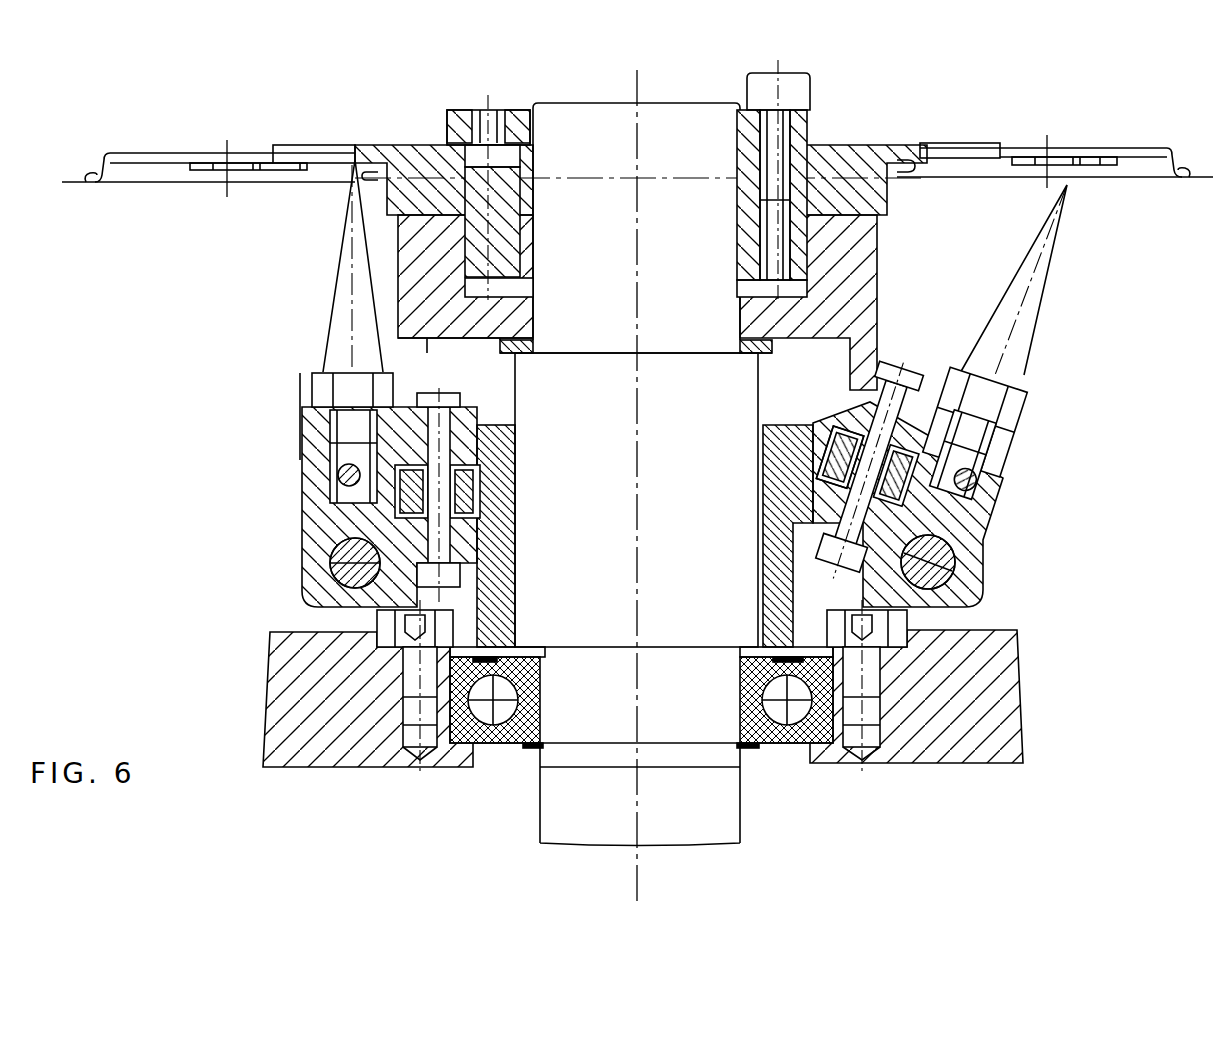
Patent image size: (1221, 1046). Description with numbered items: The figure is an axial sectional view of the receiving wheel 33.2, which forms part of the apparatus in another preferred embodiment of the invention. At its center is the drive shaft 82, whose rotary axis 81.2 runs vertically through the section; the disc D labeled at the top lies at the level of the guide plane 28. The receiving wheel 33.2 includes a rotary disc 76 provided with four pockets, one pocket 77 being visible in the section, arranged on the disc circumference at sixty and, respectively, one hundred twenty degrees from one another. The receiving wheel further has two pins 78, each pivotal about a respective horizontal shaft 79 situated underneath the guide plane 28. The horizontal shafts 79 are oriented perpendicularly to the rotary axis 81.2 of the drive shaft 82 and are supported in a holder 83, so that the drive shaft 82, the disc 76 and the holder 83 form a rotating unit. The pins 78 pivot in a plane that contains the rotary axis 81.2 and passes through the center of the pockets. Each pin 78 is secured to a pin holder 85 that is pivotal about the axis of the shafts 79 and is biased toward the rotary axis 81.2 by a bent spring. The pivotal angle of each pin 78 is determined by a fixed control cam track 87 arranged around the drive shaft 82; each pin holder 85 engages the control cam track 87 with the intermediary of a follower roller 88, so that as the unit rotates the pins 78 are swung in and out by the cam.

The drive shaft 82 is at (583, 143).
The rotary disc 76 is at (848, 148).
The receiving wheel 33.2 is at (913, 132).
The guide plane 28 is at (1117, 168).
The disk D is at (138, 157).
The pocket 77 is at (352, 150).
The pin 78 is at (1030, 305).
The holder 83 is at (850, 317).
The control cam track 87 is at (475, 445).
The follower roller 88 is at (837, 448).
The pin holder 85 is at (1000, 478).
The rotary axis 81.2 is at (745, 565).
The horizontal shaft 79 is at (345, 560).